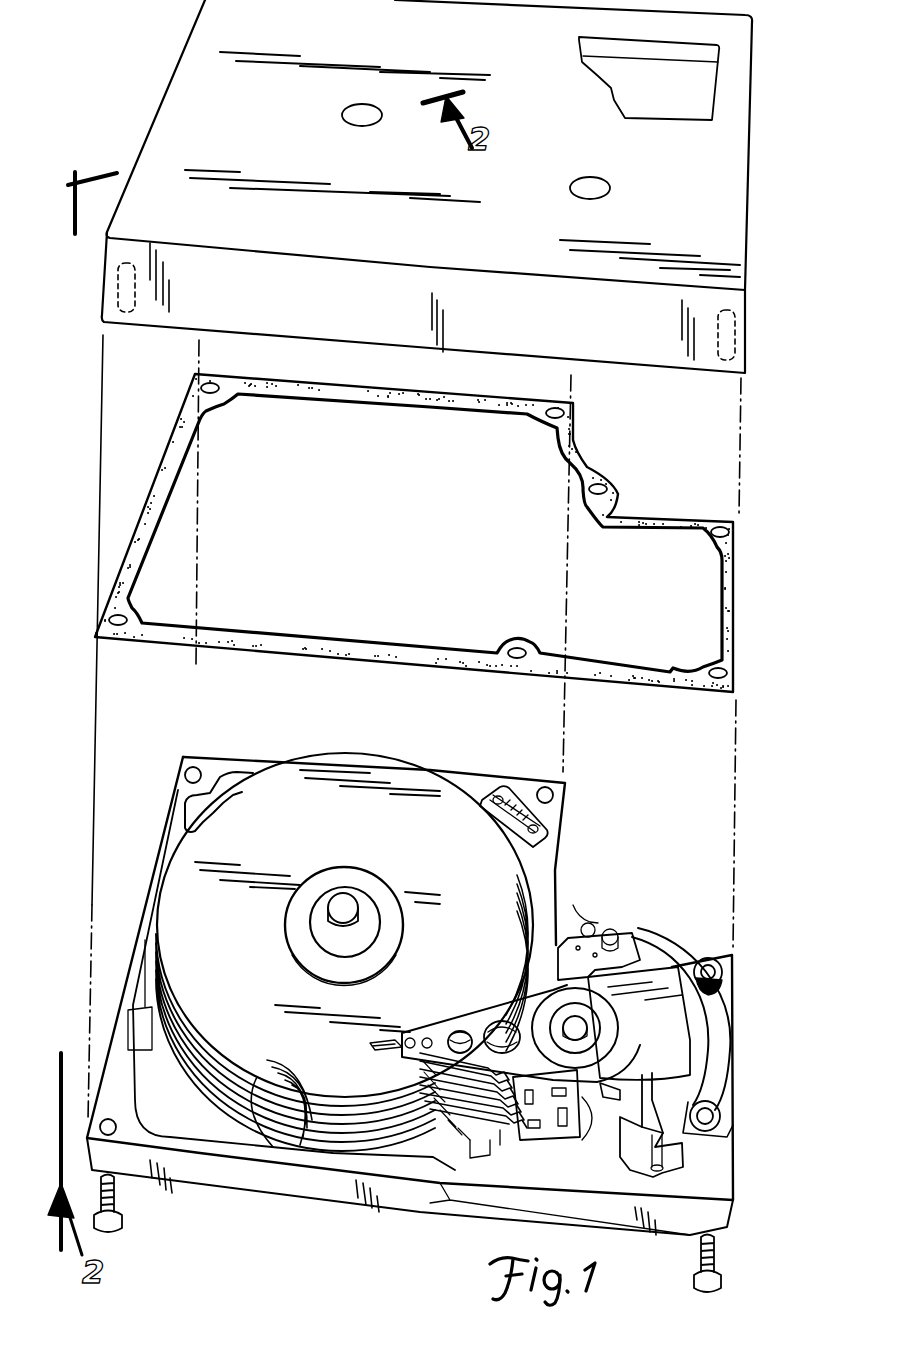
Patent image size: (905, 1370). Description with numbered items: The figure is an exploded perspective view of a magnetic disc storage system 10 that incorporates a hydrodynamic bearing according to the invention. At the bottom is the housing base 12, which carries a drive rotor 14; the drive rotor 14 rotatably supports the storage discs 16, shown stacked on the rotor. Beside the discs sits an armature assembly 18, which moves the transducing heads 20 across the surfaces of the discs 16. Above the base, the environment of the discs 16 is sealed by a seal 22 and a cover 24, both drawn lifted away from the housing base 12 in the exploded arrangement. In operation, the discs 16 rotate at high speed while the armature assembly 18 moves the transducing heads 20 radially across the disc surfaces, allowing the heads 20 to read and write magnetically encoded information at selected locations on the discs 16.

The magnetic disc storage system 10 is at (768, 100).
The housing base 12 is at (733, 1127).
The drive rotor 14 is at (320, 925).
The storage discs 16 is at (344, 952).
The armature assembly 18 is at (484, 1130).
The transducing heads 20 is at (372, 1046).
The seal 22 is at (737, 645).
The cover 24 is at (748, 217).